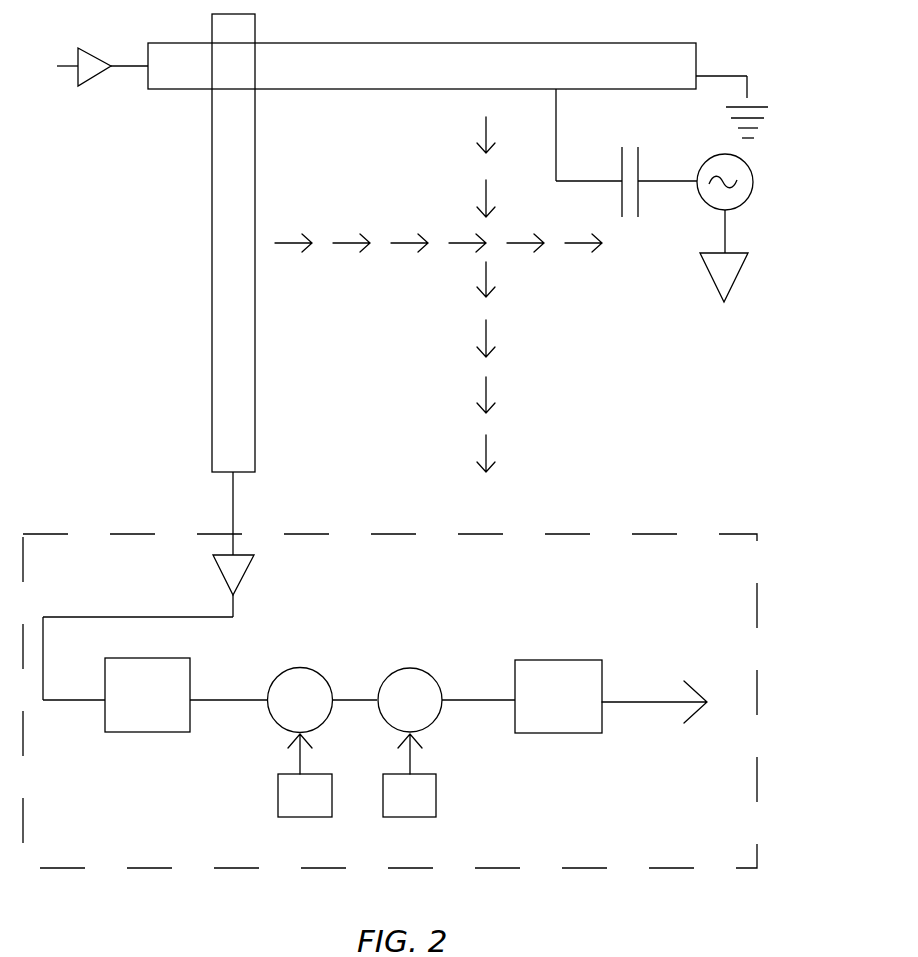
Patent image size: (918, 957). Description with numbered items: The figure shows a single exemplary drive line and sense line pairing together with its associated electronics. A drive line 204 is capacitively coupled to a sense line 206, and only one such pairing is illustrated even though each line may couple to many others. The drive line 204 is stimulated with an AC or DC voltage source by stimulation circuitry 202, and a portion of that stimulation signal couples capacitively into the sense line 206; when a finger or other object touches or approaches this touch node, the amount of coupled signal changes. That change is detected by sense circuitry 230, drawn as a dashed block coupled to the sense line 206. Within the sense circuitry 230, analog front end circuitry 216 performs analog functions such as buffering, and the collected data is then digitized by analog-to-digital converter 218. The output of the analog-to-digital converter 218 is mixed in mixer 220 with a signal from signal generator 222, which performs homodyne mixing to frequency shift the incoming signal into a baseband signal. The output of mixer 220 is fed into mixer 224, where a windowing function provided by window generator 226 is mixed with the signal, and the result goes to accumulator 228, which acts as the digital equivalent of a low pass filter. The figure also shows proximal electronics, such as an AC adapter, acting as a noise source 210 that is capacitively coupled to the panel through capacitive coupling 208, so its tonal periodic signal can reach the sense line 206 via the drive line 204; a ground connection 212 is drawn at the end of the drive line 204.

The stimulation circuitry 202 is at (86, 62).
The drive line 204 is at (306, 56).
The sense line 206 is at (212, 168).
The capacitive coupling 208 is at (629, 218).
The noise source 210 is at (746, 180).
The ground connection 212 is at (712, 76).
The analog front end circuitry 216 is at (232, 576).
The analog-to-digital converter 218 is at (164, 670).
The mixer 220 is at (308, 682).
The signal generator 222 is at (295, 817).
The mixer 224 is at (414, 672).
The window generator 226 is at (424, 817).
The accumulator 228 is at (564, 660).
The sense circuitry 230 is at (78, 536).